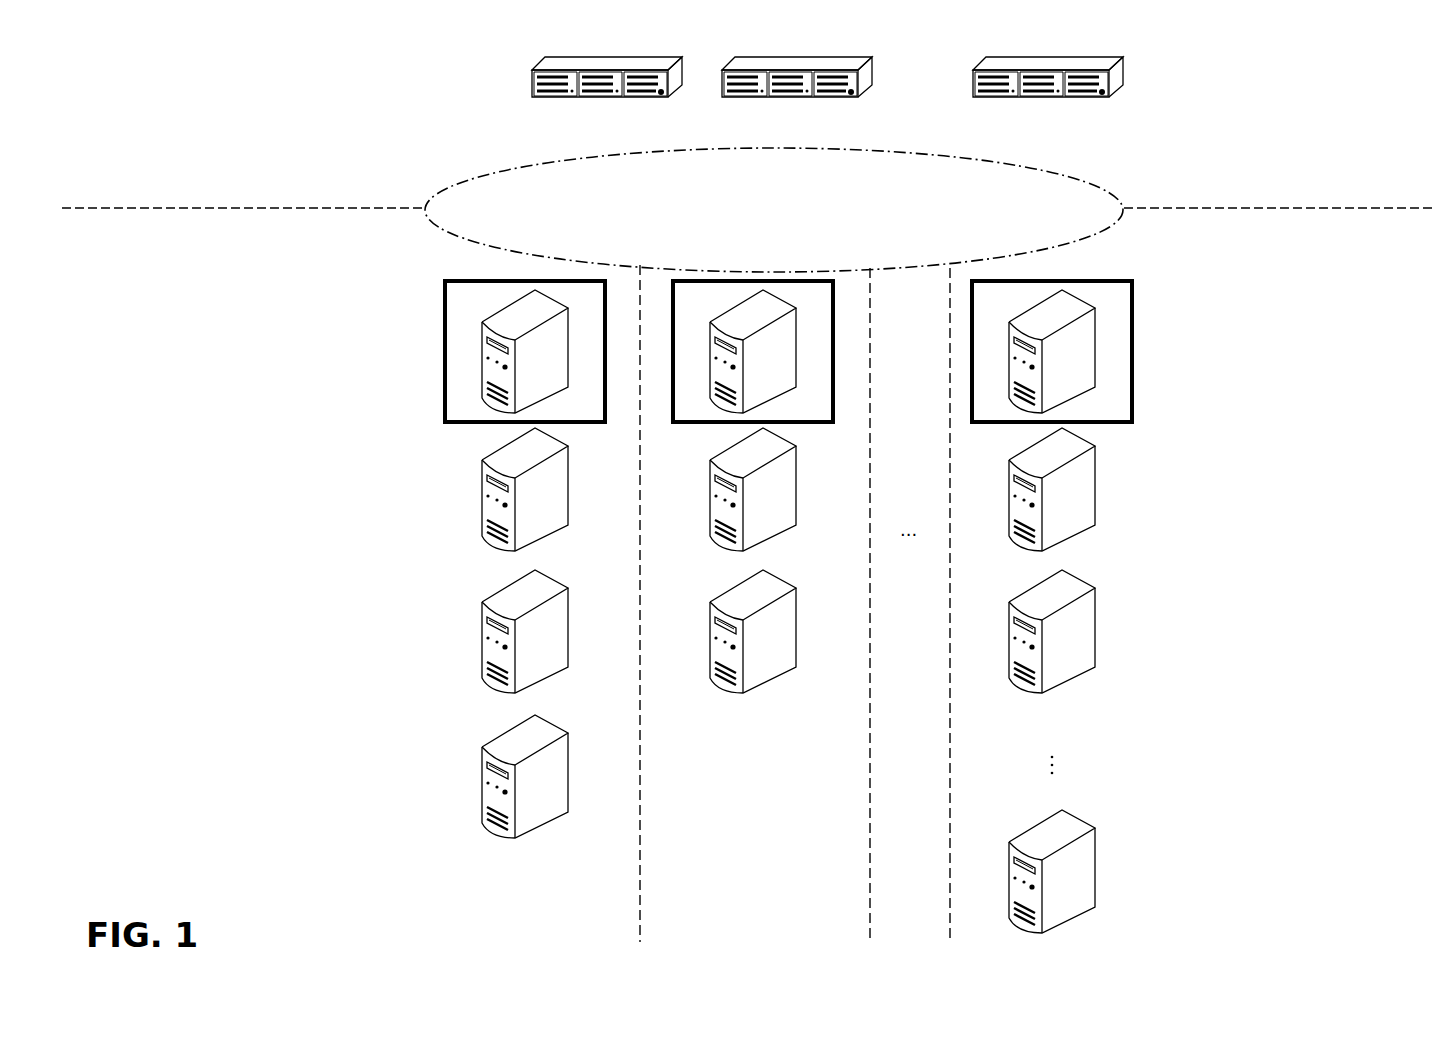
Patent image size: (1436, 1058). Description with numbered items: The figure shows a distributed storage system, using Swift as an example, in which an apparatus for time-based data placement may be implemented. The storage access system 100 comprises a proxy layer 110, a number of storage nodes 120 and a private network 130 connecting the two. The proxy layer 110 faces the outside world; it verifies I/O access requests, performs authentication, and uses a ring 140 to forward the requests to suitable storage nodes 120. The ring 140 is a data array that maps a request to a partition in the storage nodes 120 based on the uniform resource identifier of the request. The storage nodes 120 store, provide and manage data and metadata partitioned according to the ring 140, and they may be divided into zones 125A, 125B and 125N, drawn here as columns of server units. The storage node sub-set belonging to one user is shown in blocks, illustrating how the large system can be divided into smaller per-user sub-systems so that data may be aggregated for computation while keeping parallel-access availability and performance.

The storage access system 100 is at (168, 273).
The proxy layer 110 is at (330, 96).
The storage nodes 120 is at (417, 287).
The zone 125A is at (561, 929).
The zone 125B is at (780, 929).
The zone 125N is at (1190, 929).
The private network 130 is at (794, 219).
The ring 140 is at (1040, 178).